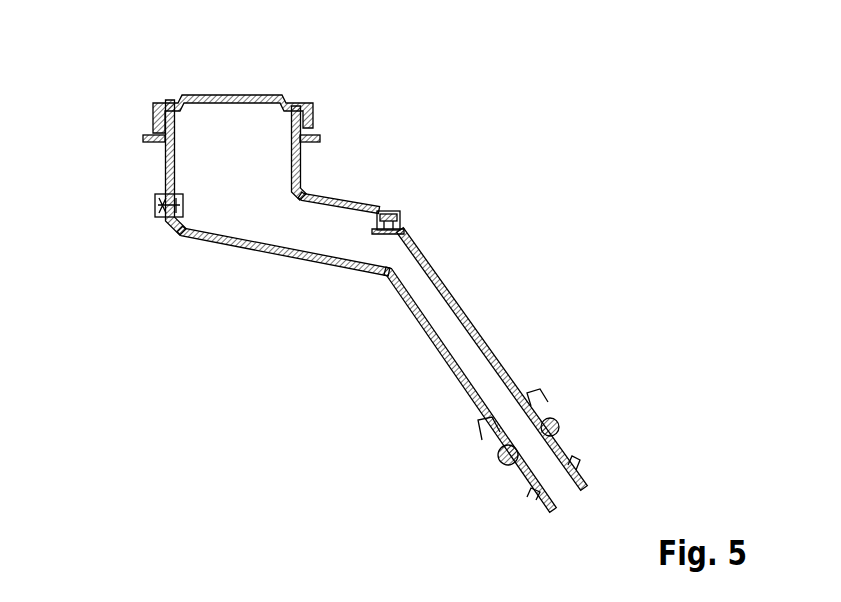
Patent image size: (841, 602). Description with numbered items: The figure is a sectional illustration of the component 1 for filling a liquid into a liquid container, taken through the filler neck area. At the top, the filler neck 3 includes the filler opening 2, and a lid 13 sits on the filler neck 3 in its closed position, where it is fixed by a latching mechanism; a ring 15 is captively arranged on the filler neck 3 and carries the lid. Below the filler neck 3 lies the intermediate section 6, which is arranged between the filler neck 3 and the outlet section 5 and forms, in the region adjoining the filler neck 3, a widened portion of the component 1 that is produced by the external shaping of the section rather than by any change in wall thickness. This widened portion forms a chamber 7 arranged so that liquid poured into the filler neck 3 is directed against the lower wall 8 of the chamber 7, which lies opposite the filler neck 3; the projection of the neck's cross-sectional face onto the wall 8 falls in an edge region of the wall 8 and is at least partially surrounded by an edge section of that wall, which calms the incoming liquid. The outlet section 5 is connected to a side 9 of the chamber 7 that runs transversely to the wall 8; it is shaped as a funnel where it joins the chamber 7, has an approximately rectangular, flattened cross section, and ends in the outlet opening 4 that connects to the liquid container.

The component 1 is at (493, 83).
The filler opening 2 is at (237, 143).
The filler neck 3 is at (306, 157).
The outlet opening 4 is at (560, 488).
The outlet section 5 is at (490, 333).
The intermediate section 6 is at (212, 245).
The chamber 7 is at (347, 197).
The lower wall 8 is at (262, 255).
The side 9 is at (380, 204).
The lid 13 is at (220, 95).
The ring 15 is at (152, 127).